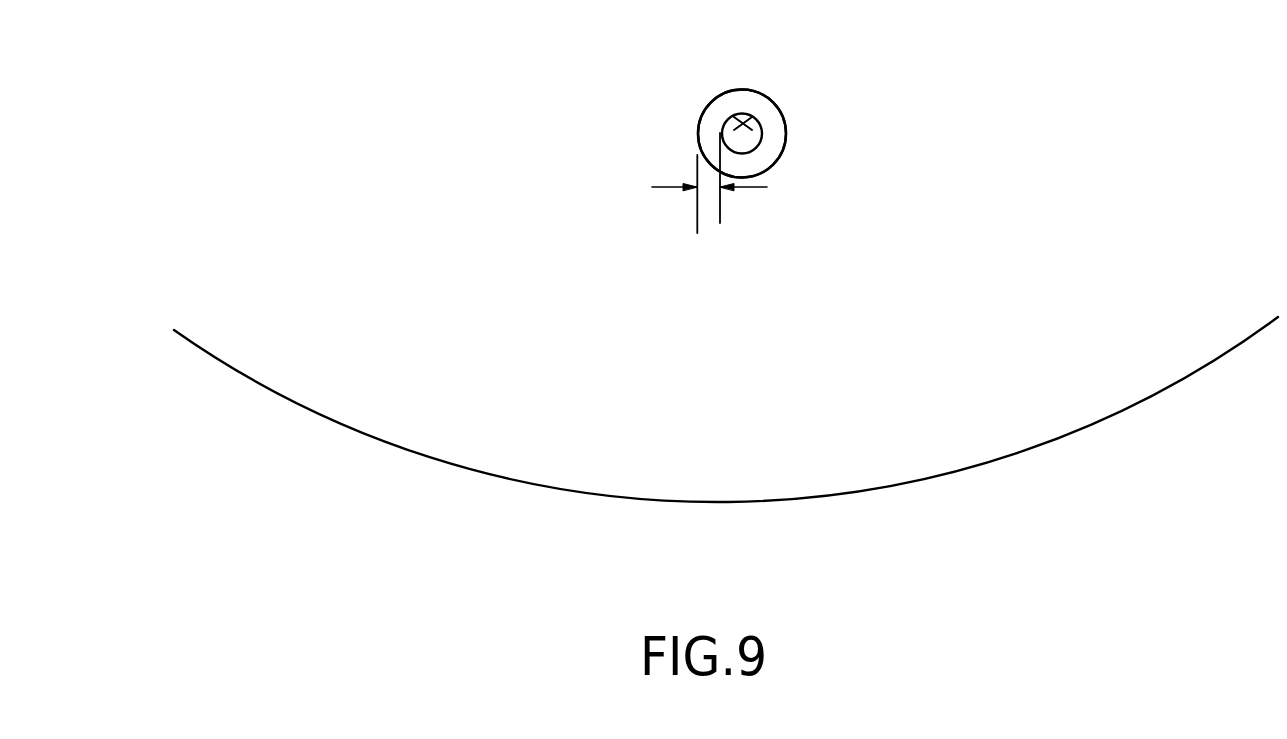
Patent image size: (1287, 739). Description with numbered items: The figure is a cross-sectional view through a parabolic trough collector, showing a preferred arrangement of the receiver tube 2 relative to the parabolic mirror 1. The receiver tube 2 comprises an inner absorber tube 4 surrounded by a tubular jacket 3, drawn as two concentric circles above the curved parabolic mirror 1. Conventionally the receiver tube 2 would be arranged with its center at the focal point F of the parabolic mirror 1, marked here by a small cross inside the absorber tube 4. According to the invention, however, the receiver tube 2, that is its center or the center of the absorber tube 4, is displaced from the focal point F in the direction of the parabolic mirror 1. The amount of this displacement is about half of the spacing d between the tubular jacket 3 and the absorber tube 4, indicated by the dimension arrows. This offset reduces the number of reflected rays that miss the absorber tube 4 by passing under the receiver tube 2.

The parabolic mirror 1 is at (297, 408).
The receiver tube 2 is at (698, 102).
The tubular jacket 3 is at (698, 134).
The absorber tube 4 is at (762, 135).
The focal point F is at (745, 116).
The spacing d is at (710, 190).